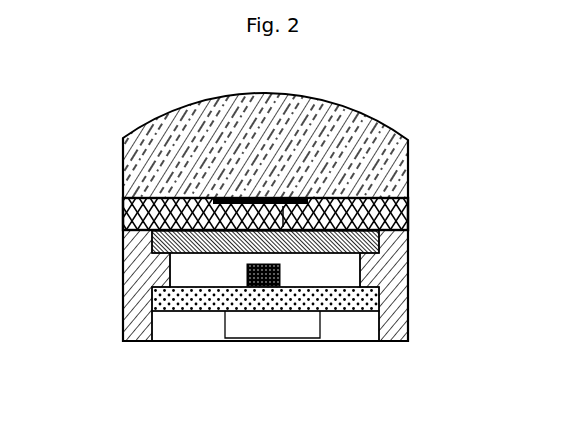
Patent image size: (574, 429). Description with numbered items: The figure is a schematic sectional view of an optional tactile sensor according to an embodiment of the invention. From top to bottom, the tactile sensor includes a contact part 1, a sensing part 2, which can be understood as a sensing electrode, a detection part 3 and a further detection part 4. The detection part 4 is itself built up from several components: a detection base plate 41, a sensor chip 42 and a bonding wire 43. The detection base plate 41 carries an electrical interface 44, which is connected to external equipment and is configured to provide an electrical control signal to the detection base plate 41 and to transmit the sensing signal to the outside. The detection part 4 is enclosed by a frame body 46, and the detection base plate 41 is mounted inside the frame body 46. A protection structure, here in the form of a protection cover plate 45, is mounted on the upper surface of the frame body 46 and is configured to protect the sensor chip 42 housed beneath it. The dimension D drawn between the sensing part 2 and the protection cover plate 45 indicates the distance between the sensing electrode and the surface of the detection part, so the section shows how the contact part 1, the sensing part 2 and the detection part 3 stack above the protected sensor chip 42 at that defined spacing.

The contact part 1 is at (200, 124).
The sensing part 2 is at (267, 198).
The detection part 3 is at (135, 212).
The detection part 4 is at (112, 285).
The detection base plate 41 is at (190, 300).
The sensor chip 42 is at (273, 262).
The bonding wire 43 is at (300, 290).
The electrical interface 44 is at (243, 325).
The protection cover plate 45 is at (362, 256).
The frame body 46 is at (399, 241).
The distance D is at (284, 213).